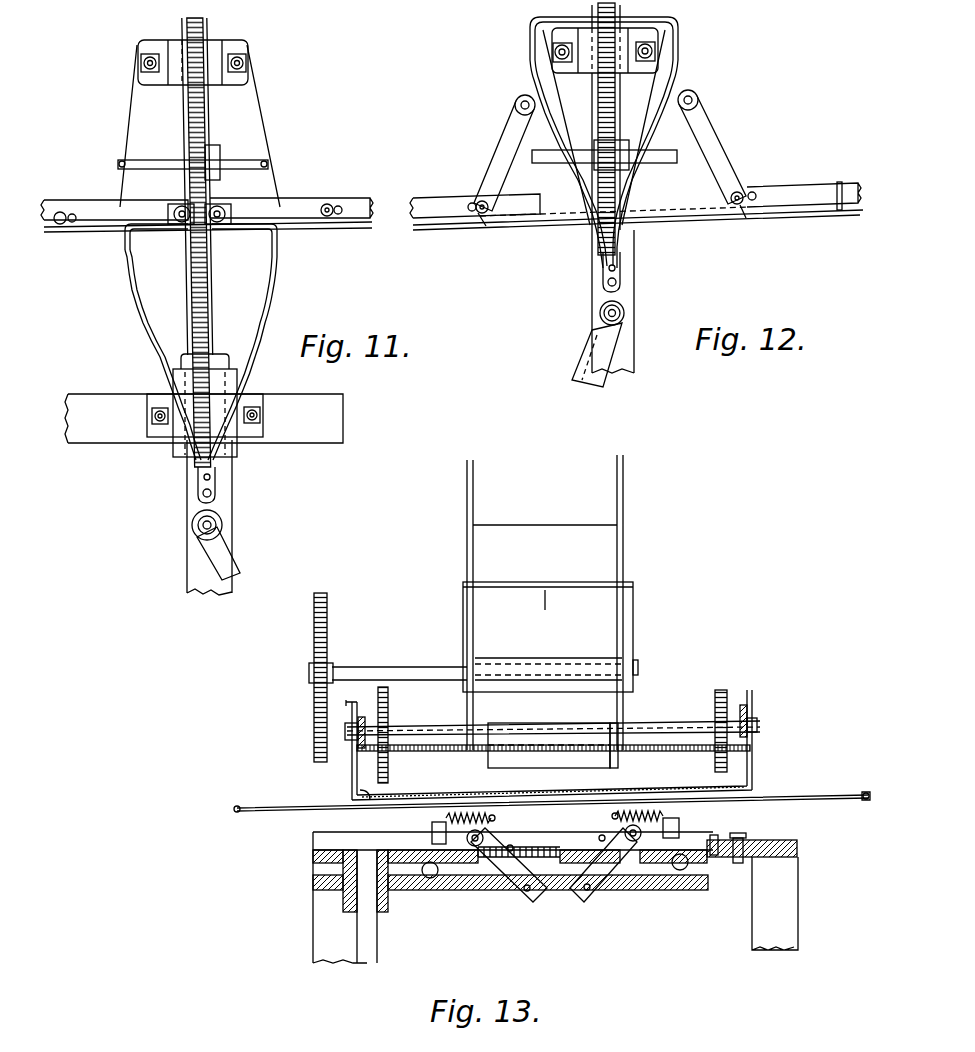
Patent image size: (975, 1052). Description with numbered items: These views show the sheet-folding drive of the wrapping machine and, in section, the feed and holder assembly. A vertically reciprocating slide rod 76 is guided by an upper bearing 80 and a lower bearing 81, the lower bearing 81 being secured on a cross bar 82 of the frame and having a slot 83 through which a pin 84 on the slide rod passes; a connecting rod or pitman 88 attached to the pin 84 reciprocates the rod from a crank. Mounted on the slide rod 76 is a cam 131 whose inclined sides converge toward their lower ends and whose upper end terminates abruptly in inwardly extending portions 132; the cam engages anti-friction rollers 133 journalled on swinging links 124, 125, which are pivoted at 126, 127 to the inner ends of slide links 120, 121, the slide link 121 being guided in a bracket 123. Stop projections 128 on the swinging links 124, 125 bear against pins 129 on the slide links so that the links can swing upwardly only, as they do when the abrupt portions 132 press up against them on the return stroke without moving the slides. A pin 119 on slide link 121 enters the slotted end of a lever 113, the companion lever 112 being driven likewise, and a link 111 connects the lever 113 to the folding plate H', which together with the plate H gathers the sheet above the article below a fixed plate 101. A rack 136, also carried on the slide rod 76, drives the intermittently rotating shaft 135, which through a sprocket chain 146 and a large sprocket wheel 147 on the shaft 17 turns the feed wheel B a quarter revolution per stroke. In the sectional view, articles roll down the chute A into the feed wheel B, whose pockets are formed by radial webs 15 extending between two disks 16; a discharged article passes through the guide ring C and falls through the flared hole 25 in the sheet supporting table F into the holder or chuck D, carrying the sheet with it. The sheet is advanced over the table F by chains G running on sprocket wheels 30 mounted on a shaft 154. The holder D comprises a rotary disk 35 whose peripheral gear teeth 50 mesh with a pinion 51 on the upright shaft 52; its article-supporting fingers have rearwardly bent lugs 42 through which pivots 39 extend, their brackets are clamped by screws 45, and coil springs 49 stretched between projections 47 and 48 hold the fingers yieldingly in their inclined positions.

In FIG. 11, the rack 136 is at (190, 126).
In FIG. 12, the rack 136 is at (616, 98).
In FIG. 11, the slide rod 76 is at (215, 112).
In FIG. 12, the slide rod 76 is at (592, 78).
In FIG. 11, the bearing or lug 80 is at (250, 48).
In FIG. 12, the bearing or lug 80 is at (660, 36).
In FIG. 11, the drive shaft 135 is at (245, 160).
In FIG. 12, the drive shaft 135 is at (560, 168).
In FIG. 11, the swinging link 124 is at (104, 205).
In FIG. 12, the swinging link 124 is at (510, 143).
In FIG. 11, the swinging link 125 is at (330, 200).
In FIG. 12, the swinging link 125 is at (712, 130).
In FIG. 11, the anti-friction roller 133 is at (176, 208).
In FIG. 12, the anti-friction roller 133 is at (514, 100).
In FIG. 11, the pivot 127 is at (325, 218).
In FIG. 12, the pivot 127 is at (740, 192).
In FIG. 11, the pivot 126 is at (56, 212).
In FIG. 12, the pivot 126 is at (478, 202).
In FIG. 11, the stop pin 129 is at (70, 224).
In FIG. 12, the stop pin 129 is at (470, 212).
In FIG. 11, the inwardly extending portion 132 is at (152, 232).
In FIG. 12, the inwardly extending portion 132 is at (548, 17).
In FIG. 11, the cam 131 is at (278, 290).
In FIG. 12, the cam 131 is at (680, 62).
In FIG. 11, the cross bar 82 is at (345, 412).
In FIG. 11, the bearing or lug 81 is at (266, 440).
In FIG. 11, the slot 83 is at (176, 428).
In FIG. 11, the pin 84 is at (222, 520).
In FIG. 12, the pin 84 is at (623, 310).
In FIG. 11, the connecting rod or pitman 88 is at (240, 566).
In FIG. 12, the connecting rod or pitman 88 is at (578, 345).
In FIG. 12, the slide link 120 is at (422, 197).
In FIG. 12, the slide link 121 is at (804, 184).
In FIG. 12, the bracket 123 is at (840, 180).
In FIG. 12, the stop projection 128 is at (486, 226).
In FIG. 13, the chute or feed trough A is at (625, 490).
In FIG. 13, the feed wheel B is at (612, 632).
In FIG. 13, the disk 16 is at (476, 622).
In FIG. 13, the radial web 15 is at (545, 610).
In FIG. 13, the shaft 17 is at (640, 668).
In FIG. 13, the sprocket chain 146 is at (328, 644).
In FIG. 13, the sprocket wheel 147 is at (318, 592).
In FIG. 13, the sprocket wheel 30 is at (386, 690).
In FIG. 13, the chains or belts G is at (392, 712).
In FIG. 13, the shaft 154 is at (640, 724).
In FIG. 13, the guide ring C is at (500, 750).
In FIG. 13, the sheet supporting plate or table F is at (402, 792).
In FIG. 13, the hole or opening 25 is at (606, 790).
In FIG. 13, the pin 119 is at (290, 808).
In FIG. 13, the link 111 is at (790, 795).
In FIG. 13, the plate H is at (310, 769).
In FIG. 13, the plate H' is at (785, 810).
In FIG. 13, the plate 101 is at (757, 796).
In FIG. 13, the lever 113 is at (865, 802).
In FIG. 13, the lever 112 is at (237, 812).
In FIG. 13, the gear teeth 50 is at (315, 838).
In FIG. 13, the pinion 51 is at (315, 857).
In FIG. 13, the upright shaft 52 is at (358, 936).
In FIG. 13, the upwardly extending part 48 is at (432, 830).
In FIG. 13, the upwardly extending projection 47 is at (496, 818).
In FIG. 13, the coil spring 49 is at (492, 815).
In FIG. 13, the rearwardly bent lug 42 is at (532, 898).
In FIG. 13, the clamping screw 45 is at (428, 878).
In FIG. 13, the rotary disk or ring 35 is at (462, 842).
In FIG. 13, the pivot or pin 39 is at (478, 848).
In FIG. 13, the holder or chuck D is at (540, 920).